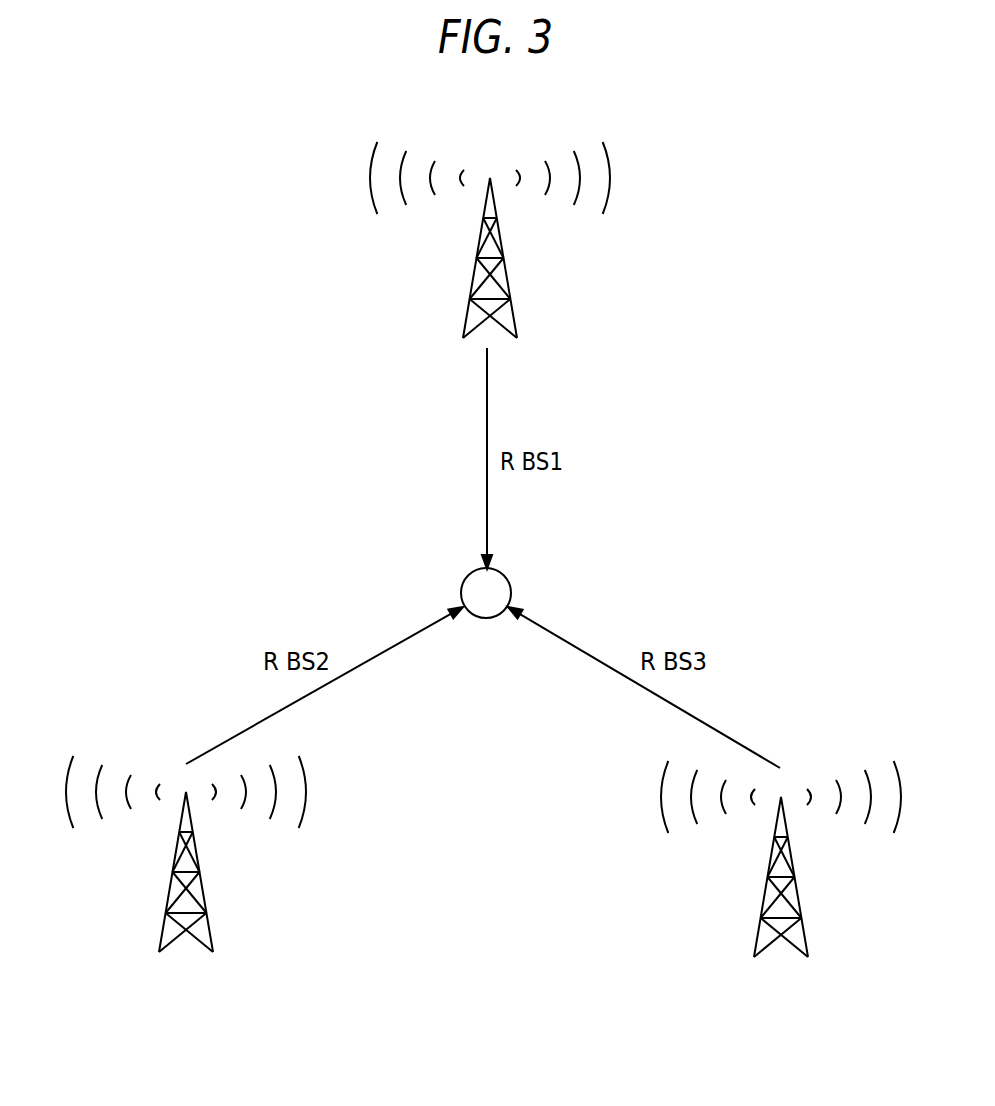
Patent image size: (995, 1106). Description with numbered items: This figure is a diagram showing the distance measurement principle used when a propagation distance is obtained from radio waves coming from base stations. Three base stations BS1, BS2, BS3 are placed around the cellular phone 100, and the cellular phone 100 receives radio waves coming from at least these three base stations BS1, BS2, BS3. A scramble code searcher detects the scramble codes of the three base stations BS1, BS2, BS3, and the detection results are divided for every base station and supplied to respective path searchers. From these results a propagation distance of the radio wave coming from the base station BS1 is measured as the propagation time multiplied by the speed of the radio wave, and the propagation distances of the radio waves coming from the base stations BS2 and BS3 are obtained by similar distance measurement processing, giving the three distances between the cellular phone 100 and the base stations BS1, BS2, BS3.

The cellular phone 100 is at (507, 580).
The base station BS1 is at (490, 240).
The base station BS2 is at (186, 854).
The base station BS3 is at (781, 859).